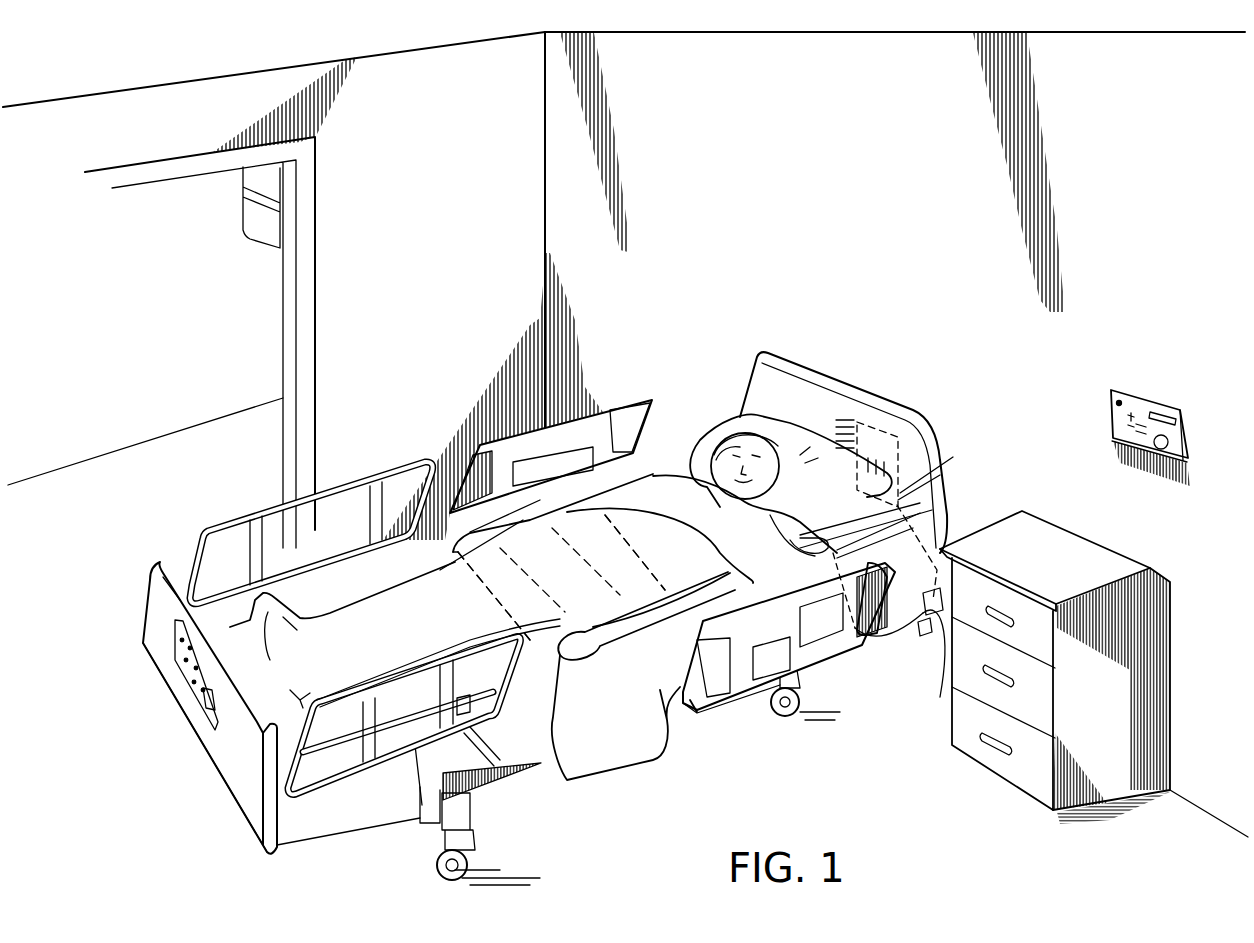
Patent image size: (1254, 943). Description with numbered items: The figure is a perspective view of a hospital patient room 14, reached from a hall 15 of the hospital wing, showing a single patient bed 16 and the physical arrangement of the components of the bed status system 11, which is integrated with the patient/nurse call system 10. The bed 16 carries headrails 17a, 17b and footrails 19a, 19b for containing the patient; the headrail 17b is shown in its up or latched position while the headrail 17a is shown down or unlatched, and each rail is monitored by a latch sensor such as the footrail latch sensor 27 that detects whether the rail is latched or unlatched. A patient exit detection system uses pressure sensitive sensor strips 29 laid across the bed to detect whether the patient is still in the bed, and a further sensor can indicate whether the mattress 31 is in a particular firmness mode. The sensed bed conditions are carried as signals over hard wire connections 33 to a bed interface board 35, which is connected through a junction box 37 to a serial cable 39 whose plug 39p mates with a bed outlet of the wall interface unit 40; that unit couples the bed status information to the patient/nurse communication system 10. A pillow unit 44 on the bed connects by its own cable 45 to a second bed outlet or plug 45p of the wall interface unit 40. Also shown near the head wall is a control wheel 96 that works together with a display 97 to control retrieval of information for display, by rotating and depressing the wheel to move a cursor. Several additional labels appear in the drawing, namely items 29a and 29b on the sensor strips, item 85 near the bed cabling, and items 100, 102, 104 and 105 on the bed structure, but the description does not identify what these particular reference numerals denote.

The patient/nurse call system 10 is at (1170, 387).
The bed status system 11 is at (886, 366).
The patient room 14 is at (1224, 133).
The hall 15 is at (227, 309).
The patient bed 16 is at (210, 773).
The headrail 17a is at (726, 705).
The headrail 17b is at (599, 402).
The footrail 19a is at (320, 795).
The footrail 19b is at (222, 525).
The footrail latch sensor 27 is at (443, 662).
The pressure sensitive sensor strips 29 is at (543, 550).
The mattress section 29a is at (628, 537).
The mattress section 29b is at (490, 587).
The mattress 31 is at (351, 596).
The hard wire connections 33 is at (835, 427).
The bed interface board 35 is at (873, 423).
The junction box 37 is at (940, 465).
The serial cable 39 is at (917, 520).
The plug 39p is at (955, 598).
The wall interface unit 40 is at (940, 697).
The pillow unit 44 is at (823, 512).
The cable 45 is at (856, 645).
The bed outlet or plug 45p is at (920, 636).
The pendant cord 85 is at (876, 622).
The control wheel 96 is at (1166, 445).
The display 97 is at (1176, 418).
The headboard 100 is at (779, 333).
The footboard 102 is at (148, 598).
The pillow 104 is at (713, 432).
The footboard edge 105 is at (200, 605).